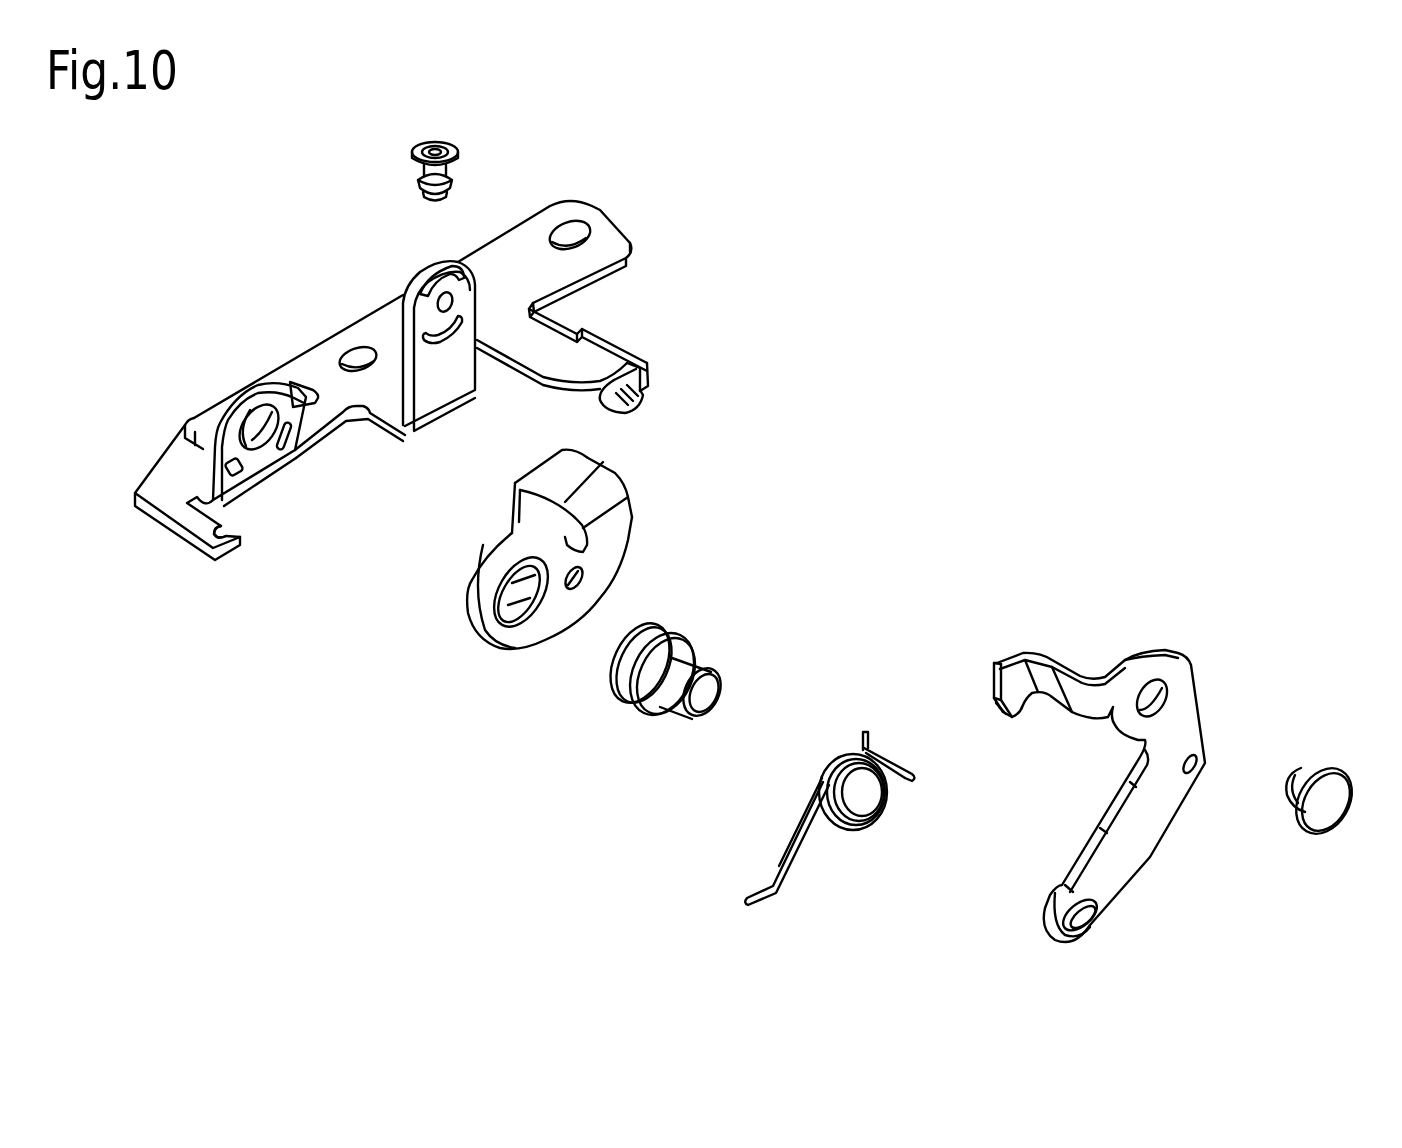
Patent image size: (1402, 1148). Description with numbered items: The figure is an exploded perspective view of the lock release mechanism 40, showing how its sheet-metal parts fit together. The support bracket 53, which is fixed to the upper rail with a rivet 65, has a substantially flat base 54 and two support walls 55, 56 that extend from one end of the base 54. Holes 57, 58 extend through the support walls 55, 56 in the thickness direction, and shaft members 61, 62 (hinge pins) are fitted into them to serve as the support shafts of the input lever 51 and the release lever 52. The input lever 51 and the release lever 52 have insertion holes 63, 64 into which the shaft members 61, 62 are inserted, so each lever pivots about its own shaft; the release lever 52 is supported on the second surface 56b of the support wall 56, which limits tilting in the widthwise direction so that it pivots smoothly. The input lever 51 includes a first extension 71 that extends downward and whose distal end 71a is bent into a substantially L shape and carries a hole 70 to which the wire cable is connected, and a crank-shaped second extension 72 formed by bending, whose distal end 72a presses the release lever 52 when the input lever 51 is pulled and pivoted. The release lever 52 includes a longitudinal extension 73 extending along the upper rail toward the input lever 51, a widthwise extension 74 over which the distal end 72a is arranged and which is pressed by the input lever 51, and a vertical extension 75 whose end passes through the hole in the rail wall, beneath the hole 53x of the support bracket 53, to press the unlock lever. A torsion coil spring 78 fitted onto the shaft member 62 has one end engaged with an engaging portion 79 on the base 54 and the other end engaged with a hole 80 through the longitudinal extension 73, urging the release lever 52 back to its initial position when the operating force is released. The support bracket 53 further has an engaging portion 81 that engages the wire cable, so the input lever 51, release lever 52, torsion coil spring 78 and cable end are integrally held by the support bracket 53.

The lock release mechanism 40 is at (172, 209).
The input lever 51 is at (1183, 663).
The release lever 52 is at (470, 592).
The support bracket 53 is at (607, 217).
The hole 53x is at (292, 383).
The base 54 is at (532, 228).
The support wall 55 is at (437, 273).
The support wall 56 is at (262, 375).
The second surface 56b is at (287, 410).
The hole 57 is at (428, 322).
The hole 58 is at (262, 420).
The shaft member 61 is at (1328, 808).
The shaft member 62 is at (707, 698).
The insertion hole 63 is at (1152, 702).
The insertion hole 64 is at (513, 600).
The rivet 65 is at (413, 157).
The hole 70 is at (1070, 913).
The first extension 71 is at (1140, 845).
The distal end 71a is at (1050, 927).
The second extension 72 is at (1046, 668).
The distal end 72a is at (1010, 715).
The longitudinal extension 73 is at (607, 560).
The widthwise extension 74 is at (587, 463).
The vertical extension 75 is at (518, 510).
The torsion coil spring 78 is at (873, 822).
The engaging portion 79 is at (232, 528).
The hole 80 is at (570, 590).
The engaging portion 81 is at (645, 397).